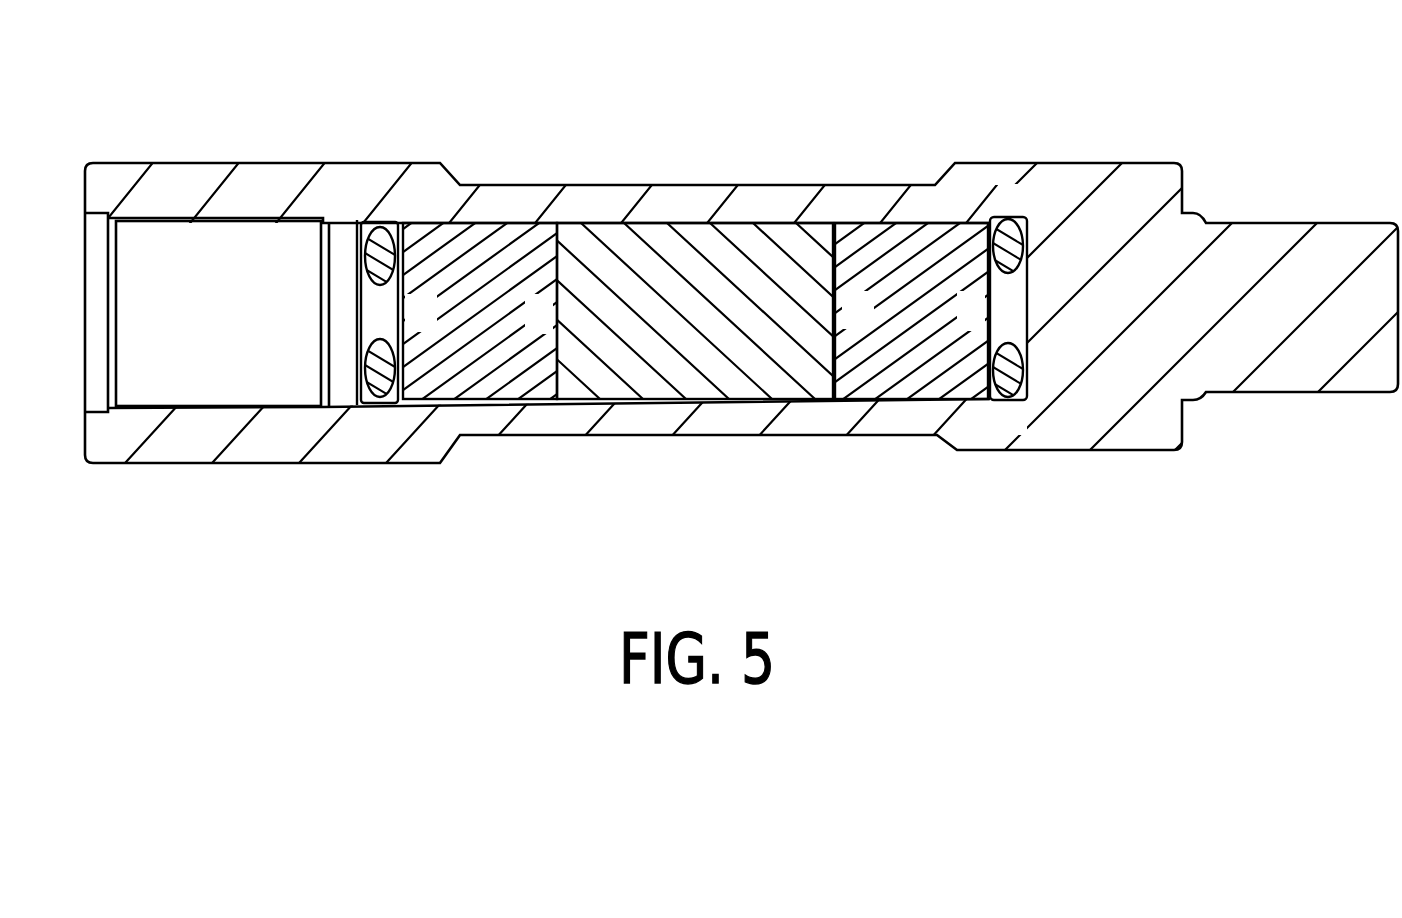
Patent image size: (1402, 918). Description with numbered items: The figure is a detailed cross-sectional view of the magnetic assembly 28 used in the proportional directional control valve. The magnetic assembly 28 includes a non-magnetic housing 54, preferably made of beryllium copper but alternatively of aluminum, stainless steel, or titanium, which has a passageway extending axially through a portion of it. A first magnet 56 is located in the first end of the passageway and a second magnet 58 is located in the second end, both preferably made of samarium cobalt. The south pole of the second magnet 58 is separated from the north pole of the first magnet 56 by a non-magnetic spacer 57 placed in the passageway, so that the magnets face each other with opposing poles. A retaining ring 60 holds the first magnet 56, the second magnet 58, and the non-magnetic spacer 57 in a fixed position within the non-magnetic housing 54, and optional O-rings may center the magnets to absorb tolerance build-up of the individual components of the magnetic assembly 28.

The magnetic assembly 28 is at (798, 89).
The non-magnetic housing 54 is at (1062, 417).
The first magnet 56 is at (483, 357).
The non-magnetic spacer 57 is at (665, 368).
The second magnet 58 is at (913, 352).
The retaining ring 60 is at (353, 346).